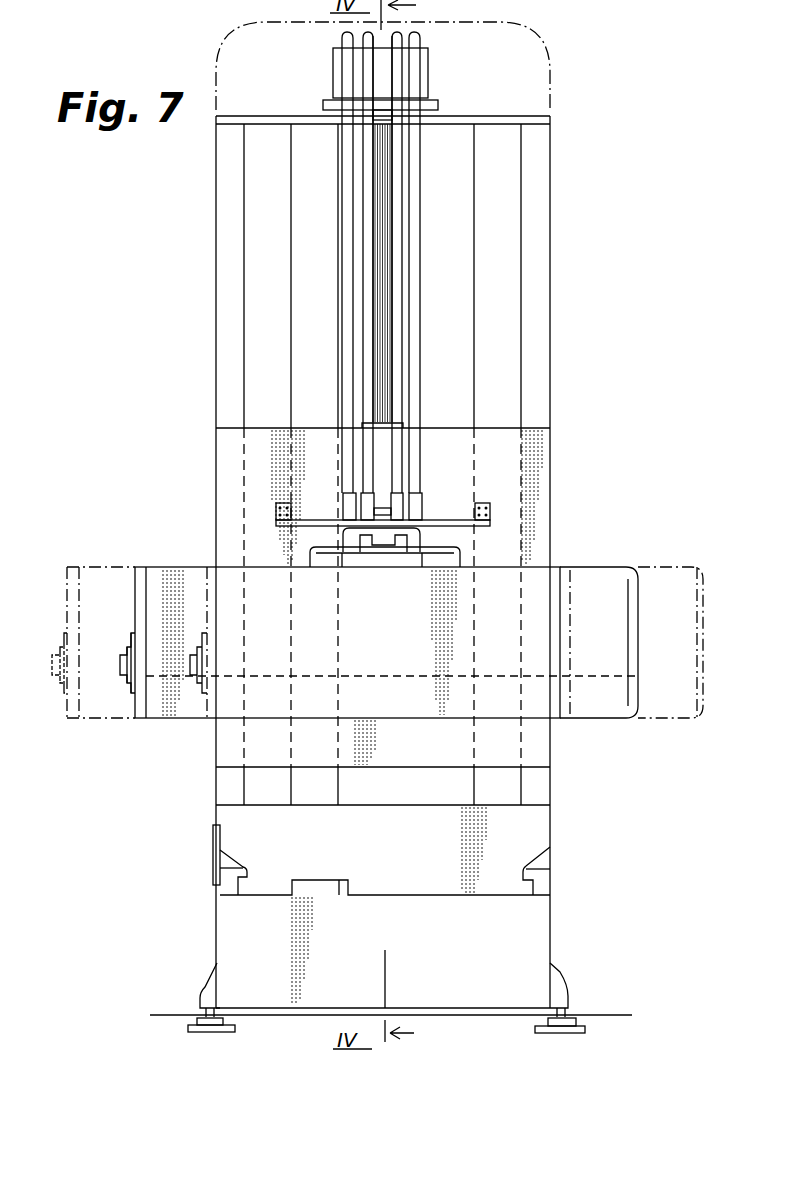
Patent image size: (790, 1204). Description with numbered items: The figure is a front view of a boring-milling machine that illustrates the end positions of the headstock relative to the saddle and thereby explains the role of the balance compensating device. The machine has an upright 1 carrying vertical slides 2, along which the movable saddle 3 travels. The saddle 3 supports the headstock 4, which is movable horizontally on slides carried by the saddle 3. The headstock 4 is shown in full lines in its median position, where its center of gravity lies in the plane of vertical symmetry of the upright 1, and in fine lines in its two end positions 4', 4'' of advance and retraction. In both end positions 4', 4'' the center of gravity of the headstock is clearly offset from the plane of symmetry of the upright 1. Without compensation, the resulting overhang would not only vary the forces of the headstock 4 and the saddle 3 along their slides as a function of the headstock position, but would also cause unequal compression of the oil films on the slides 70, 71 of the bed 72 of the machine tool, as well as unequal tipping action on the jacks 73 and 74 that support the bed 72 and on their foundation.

The upright 1 is at (540, 239).
The vertical slides 2 is at (250, 361).
The saddle 3 is at (510, 470).
The headstock 4 is at (411, 622).
The end position of the headstock 4' is at (315, 672).
The end position of the headstock 4'' is at (427, 672).
The slide 70 is at (244, 895).
The slide 71 is at (520, 895).
The bed 72 is at (252, 950).
The jack 73 is at (205, 1024).
The jack 74 is at (565, 1024).